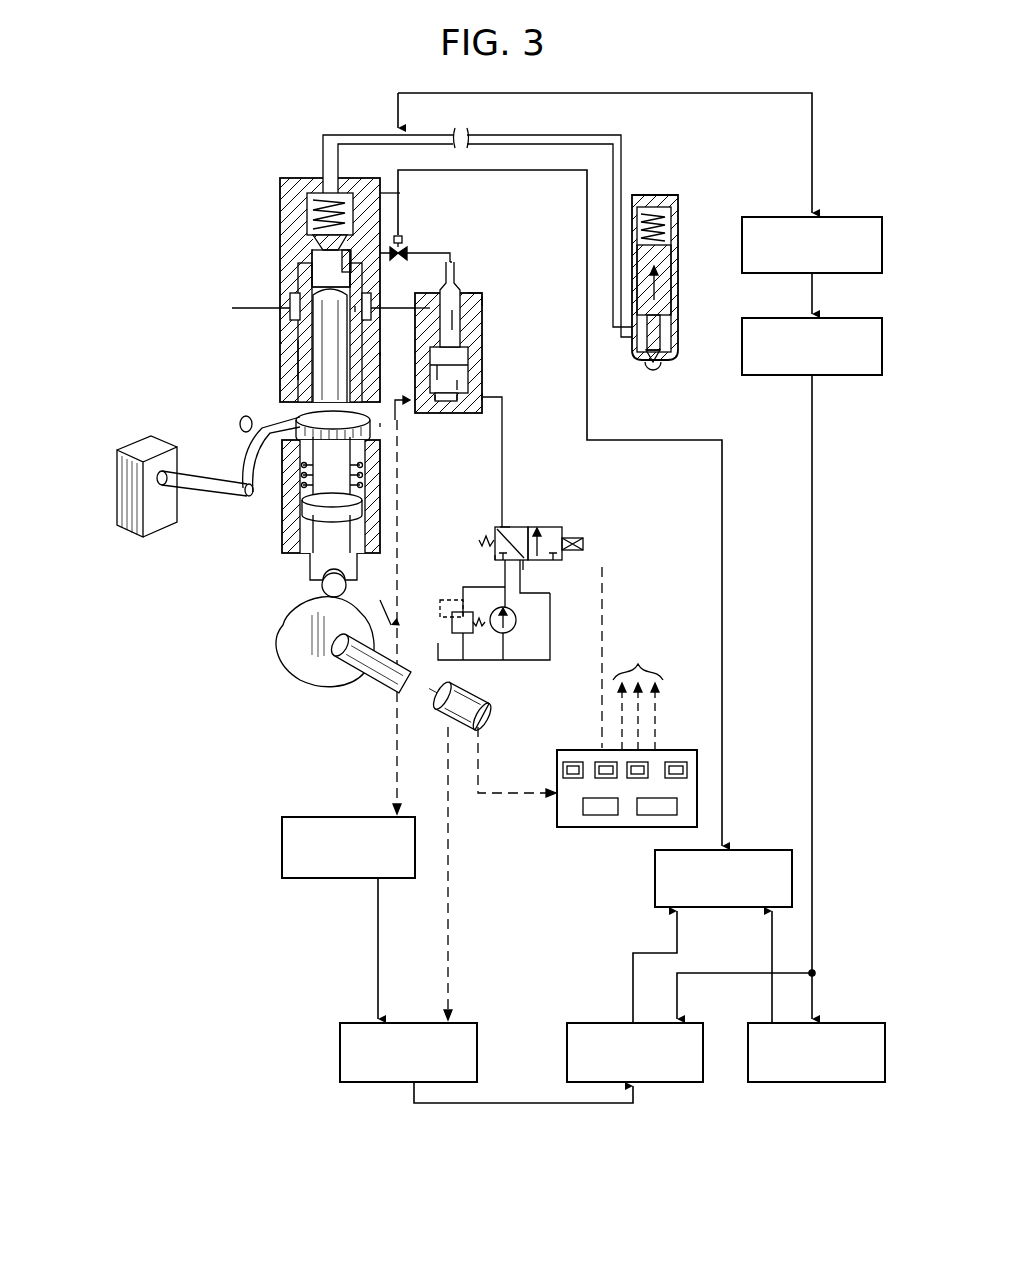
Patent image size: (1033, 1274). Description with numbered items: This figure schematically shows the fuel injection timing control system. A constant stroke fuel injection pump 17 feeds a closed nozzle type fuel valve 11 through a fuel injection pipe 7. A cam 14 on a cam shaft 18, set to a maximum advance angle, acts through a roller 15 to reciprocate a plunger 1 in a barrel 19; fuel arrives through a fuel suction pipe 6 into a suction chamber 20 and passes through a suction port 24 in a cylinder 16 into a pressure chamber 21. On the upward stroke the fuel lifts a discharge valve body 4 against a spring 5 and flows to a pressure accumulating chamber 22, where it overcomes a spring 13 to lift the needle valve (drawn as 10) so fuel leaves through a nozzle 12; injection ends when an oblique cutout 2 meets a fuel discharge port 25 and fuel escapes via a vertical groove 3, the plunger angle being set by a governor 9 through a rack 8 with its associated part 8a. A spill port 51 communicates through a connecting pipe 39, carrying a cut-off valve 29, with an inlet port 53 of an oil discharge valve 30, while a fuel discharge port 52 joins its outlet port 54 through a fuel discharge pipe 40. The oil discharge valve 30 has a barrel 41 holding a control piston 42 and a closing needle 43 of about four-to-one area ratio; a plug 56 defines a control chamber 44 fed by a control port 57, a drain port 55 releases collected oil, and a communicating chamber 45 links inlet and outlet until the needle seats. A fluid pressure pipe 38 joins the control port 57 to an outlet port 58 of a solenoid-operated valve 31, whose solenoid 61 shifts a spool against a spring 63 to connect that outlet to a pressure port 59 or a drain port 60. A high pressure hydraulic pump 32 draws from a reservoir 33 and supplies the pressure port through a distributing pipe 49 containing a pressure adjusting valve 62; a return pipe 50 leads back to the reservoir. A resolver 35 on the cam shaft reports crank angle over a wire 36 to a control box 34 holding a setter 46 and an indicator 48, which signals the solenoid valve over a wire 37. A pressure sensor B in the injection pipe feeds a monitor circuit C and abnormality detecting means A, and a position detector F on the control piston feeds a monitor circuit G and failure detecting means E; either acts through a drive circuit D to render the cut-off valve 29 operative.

The plunger 1 is at (380, 448).
The oblique cutout 2 is at (315, 372).
The vertical groove 3 is at (280, 343).
The discharge valve body 4 is at (318, 230).
The spring 5 is at (317, 196).
The fuel suction pipe 6 is at (232, 308).
The fuel injection pipe 7 is at (345, 135).
The rack 8 is at (266, 437).
The lever pin 8a is at (246, 495).
The governor 9 is at (170, 528).
The needle valve 10 is at (666, 268).
The fuel valve 11 is at (659, 190).
The nozzle 12 is at (660, 371).
The spring 13 is at (668, 211).
The cam 14 is at (290, 646).
The roller 15 is at (322, 586).
The cylinder 16 is at (303, 357).
The fuel injection pump 17 is at (278, 156).
The cam shaft 18 is at (345, 672).
The barrel 19 is at (410, 193).
The suction chamber 20 is at (302, 292).
The pressure chamber 21 is at (318, 265).
The pressure accumulating chamber 22 is at (668, 330).
The suction port 24 is at (300, 316).
The fuel discharge port 25 is at (380, 352).
The cut-off valve 29 is at (401, 246).
The oil discharge valve 30 is at (491, 340).
The solenoid-operated valve 31 is at (551, 524).
The high pressure hydraulic pump 32 is at (515, 628).
The reservoir 33 is at (562, 650).
The control box 34 is at (700, 730).
The resolver 35 is at (452, 720).
The wire 36 is at (516, 793).
The wire 37 is at (605, 570).
The fluid pressure pipe 38 is at (503, 461).
The connecting pipe 39 is at (452, 262).
The fuel discharge pipe 40 is at (457, 284).
The barrel 41 is at (437, 368).
The control piston 42 is at (457, 382).
The closing needle 43 is at (452, 320).
The control chamber 44 is at (435, 401).
The communicating chamber 45 is at (484, 300).
The setter 46 is at (672, 764).
The indicator 48 is at (647, 815).
The distributing pipe 49 is at (510, 603).
The return pipe 50 is at (520, 583).
The spill port 51 is at (352, 270).
The fuel discharge port 52 is at (355, 310).
The inlet port 53 is at (480, 290).
The outlet port 54 is at (406, 314).
The drain port 55 is at (482, 346).
The plug 56 is at (458, 402).
The control port 57 is at (482, 398).
The outlet port 58 is at (500, 527).
The pressure port 59 is at (498, 562).
The drain port 60 is at (522, 569).
The solenoid 61 is at (583, 542).
The pressure adjusting valve 62 is at (452, 622).
The spring 63 is at (479, 540).
The abnormality detecting means A is at (848, 1023).
The pressure sensor B is at (846, 217).
The monitor circuit C is at (846, 318).
The drive circuit D is at (762, 850).
The failure detecting means E is at (583, 1023).
The position detector F is at (295, 817).
The monitor circuit G is at (340, 1068).